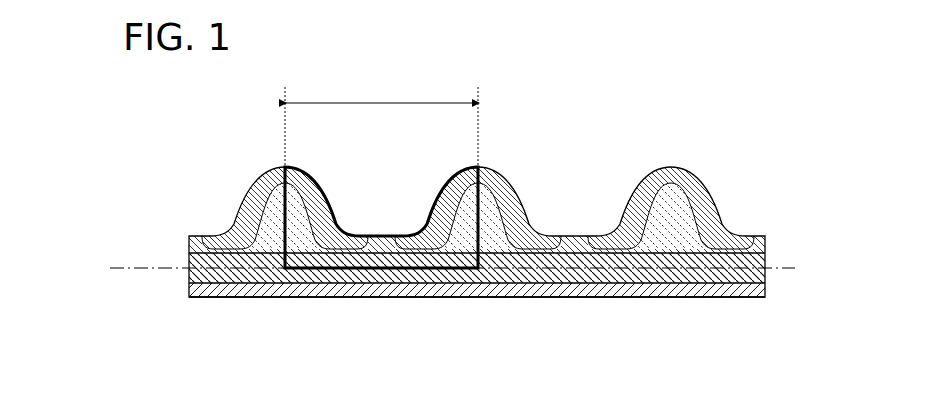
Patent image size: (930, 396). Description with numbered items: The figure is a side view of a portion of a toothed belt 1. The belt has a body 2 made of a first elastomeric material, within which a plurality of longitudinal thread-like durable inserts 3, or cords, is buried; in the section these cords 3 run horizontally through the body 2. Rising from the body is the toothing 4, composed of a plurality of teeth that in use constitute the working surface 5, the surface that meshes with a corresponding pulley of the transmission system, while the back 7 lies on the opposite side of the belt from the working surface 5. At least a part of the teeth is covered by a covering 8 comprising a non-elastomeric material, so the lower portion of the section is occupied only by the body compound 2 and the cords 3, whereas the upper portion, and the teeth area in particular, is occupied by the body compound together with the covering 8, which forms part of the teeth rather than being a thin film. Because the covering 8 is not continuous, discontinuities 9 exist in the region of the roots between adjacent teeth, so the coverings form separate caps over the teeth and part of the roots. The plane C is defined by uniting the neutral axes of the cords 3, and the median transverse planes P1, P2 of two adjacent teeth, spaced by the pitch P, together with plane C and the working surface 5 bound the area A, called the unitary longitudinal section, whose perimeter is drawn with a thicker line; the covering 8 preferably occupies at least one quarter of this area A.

The toothed belt 1 is at (782, 135).
The body 2 is at (472, 290).
The longitudinal thread-like durable inserts 3 is at (233, 270).
The toothing 4 is at (243, 202).
The working surface 5 is at (355, 190).
The back 7 is at (368, 302).
The covering 8 is at (262, 170).
The discontinuities 9 is at (575, 238).
The area A is at (302, 250).
The plane C is at (788, 268).
The pitch P is at (381, 87).
The median transverse plane P1 is at (286, 115).
The median transverse plane P2 is at (479, 115).